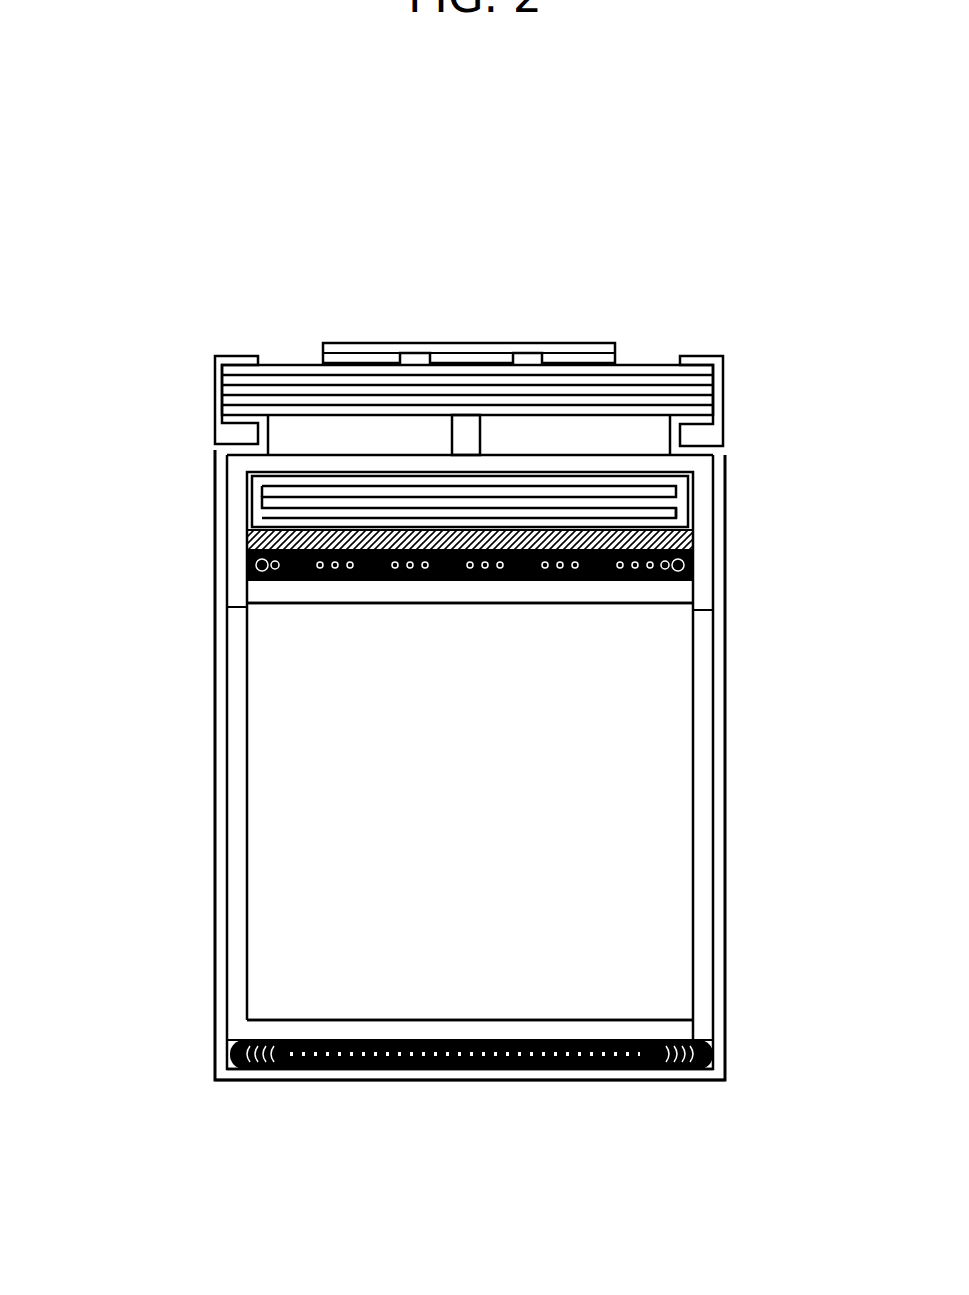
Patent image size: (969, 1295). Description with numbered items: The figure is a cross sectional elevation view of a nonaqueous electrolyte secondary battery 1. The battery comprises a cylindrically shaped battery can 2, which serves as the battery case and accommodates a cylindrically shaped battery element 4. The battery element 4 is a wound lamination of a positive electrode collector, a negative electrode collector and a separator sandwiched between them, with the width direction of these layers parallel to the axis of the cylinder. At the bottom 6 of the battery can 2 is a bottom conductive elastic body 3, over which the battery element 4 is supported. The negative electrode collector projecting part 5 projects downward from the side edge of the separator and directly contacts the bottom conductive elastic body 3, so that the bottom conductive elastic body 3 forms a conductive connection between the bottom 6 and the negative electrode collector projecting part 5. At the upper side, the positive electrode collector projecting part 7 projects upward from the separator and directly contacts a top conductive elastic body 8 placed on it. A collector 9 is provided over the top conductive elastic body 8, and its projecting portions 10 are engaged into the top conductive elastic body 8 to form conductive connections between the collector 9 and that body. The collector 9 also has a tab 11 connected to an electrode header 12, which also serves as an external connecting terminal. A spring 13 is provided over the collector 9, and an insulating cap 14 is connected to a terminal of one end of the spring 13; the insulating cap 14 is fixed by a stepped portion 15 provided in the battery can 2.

The nonaqueous electrolyte secondary battery 1 is at (190, 335).
The battery can 2 is at (722, 653).
The bottom conductive elastic body 3 is at (223, 1053).
The battery element 4 is at (470, 811).
The negative electrode collector projecting part 5 is at (600, 1033).
The bottom 6 is at (620, 1077).
The positive electrode collector projecting part 7 is at (273, 593).
The top conductive elastic body 8 is at (690, 568).
The collector 9 is at (247, 533).
The projecting portions 10 is at (563, 585).
The tab 11 is at (470, 445).
The electrode header 12 is at (398, 375).
The spring 13 is at (600, 480).
The insulating cap 14 is at (675, 468).
The stepped portion 15 is at (233, 447).